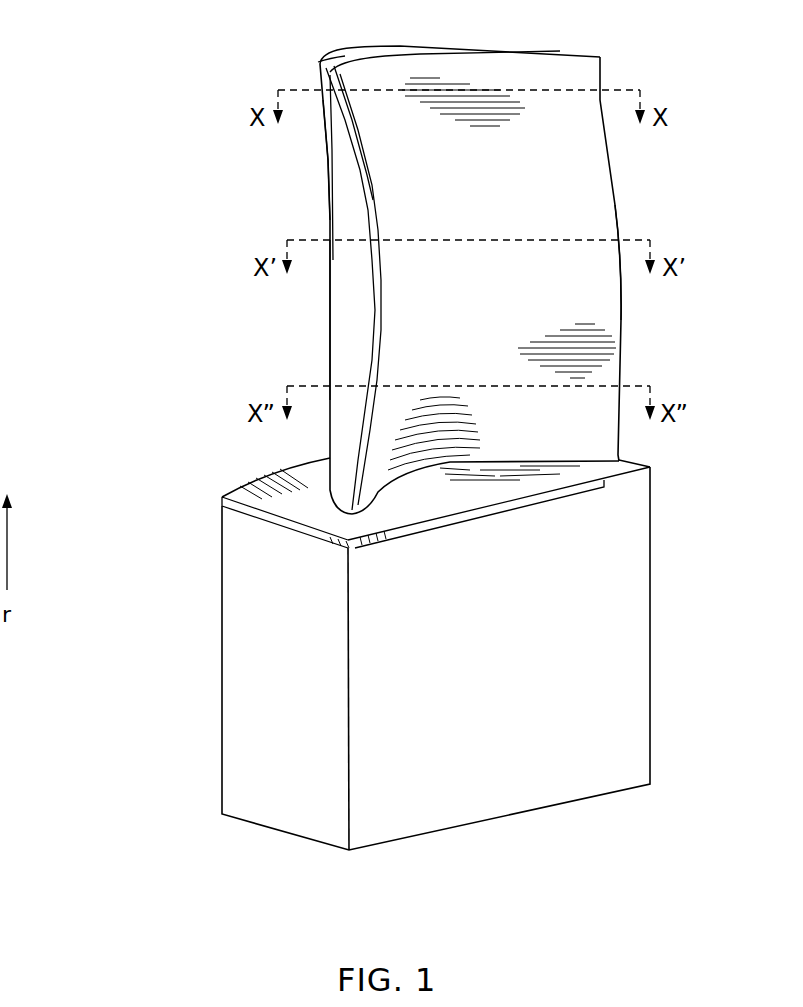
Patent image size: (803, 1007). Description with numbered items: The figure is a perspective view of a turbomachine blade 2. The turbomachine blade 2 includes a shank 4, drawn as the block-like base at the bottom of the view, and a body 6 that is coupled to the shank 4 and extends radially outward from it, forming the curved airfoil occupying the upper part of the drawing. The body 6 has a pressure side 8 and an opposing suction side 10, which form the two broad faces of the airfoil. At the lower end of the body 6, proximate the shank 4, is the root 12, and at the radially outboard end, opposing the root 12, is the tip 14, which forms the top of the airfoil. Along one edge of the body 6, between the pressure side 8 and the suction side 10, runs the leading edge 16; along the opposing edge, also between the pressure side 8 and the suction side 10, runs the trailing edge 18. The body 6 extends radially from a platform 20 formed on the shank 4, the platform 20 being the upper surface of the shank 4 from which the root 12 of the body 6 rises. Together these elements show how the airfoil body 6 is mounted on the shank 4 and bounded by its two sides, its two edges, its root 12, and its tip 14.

The turbomachine blade 2 is at (88, 54).
The shank 4 is at (518, 660).
The body 6 is at (474, 219).
The pressure side 8 is at (540, 316).
The suction side 10 is at (314, 214).
The root 12 is at (478, 454).
The tip 14 is at (322, 64).
The leading edge 16 is at (344, 314).
The trailing edge 18 is at (615, 205).
The platform 20 is at (290, 500).